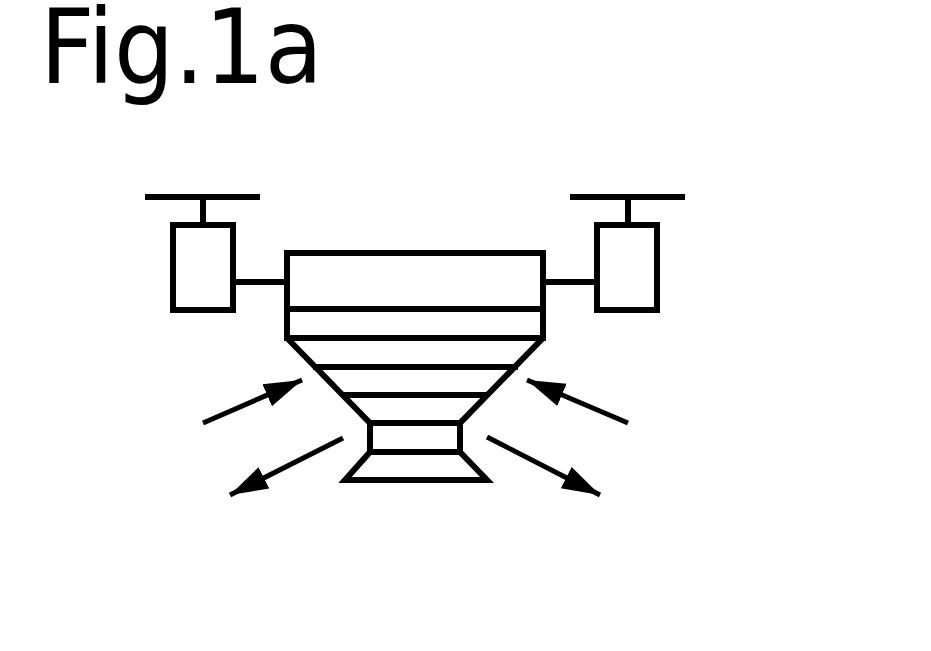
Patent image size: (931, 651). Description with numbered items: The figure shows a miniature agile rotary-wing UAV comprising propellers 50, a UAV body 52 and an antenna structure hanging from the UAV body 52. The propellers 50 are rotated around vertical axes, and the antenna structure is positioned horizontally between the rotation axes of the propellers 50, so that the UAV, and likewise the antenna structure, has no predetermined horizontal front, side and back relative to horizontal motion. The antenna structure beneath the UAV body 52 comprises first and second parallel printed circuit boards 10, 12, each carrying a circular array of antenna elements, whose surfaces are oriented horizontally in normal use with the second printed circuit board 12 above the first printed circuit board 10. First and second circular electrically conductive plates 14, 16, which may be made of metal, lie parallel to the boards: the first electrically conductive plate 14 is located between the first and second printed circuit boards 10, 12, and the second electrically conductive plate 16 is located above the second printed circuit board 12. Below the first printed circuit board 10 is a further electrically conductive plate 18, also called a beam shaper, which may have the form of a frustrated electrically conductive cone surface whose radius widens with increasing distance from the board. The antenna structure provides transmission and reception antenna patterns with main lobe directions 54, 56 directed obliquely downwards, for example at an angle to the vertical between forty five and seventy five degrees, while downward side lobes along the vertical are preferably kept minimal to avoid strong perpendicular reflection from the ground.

The first printed circuit board 10 is at (403, 427).
The second printed circuit board 12 is at (328, 368).
The first circular electrically conductive plate 14 is at (460, 398).
The second circular electrically conductive plate 16 is at (513, 342).
The further electrically conductive plate 18 is at (427, 480).
The propellers 50 is at (172, 285).
The UAV body 52 is at (453, 253).
The main lobe direction 54 is at (287, 472).
The main lobe direction 56 is at (233, 412).